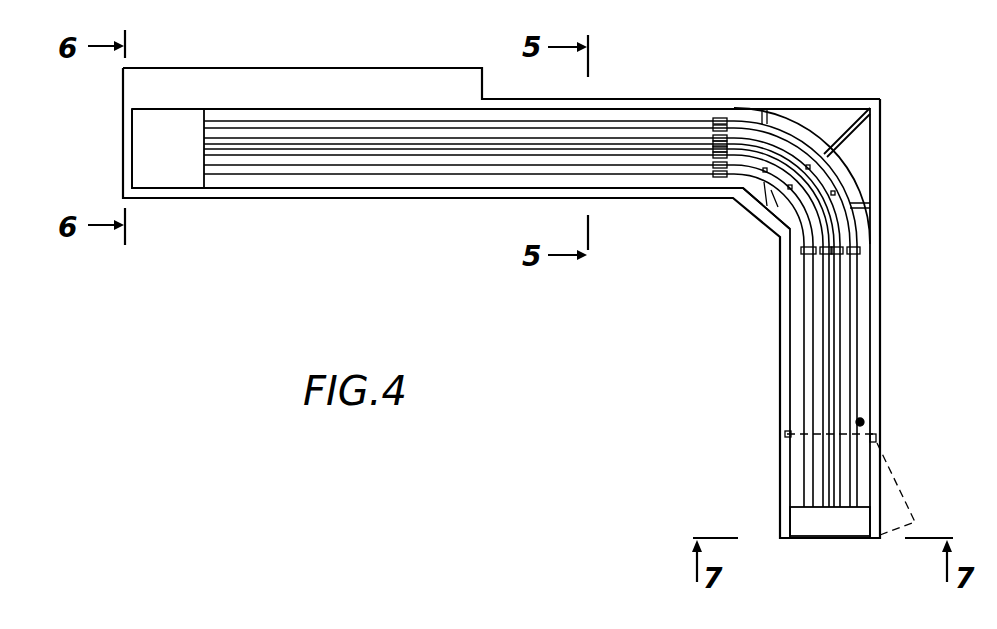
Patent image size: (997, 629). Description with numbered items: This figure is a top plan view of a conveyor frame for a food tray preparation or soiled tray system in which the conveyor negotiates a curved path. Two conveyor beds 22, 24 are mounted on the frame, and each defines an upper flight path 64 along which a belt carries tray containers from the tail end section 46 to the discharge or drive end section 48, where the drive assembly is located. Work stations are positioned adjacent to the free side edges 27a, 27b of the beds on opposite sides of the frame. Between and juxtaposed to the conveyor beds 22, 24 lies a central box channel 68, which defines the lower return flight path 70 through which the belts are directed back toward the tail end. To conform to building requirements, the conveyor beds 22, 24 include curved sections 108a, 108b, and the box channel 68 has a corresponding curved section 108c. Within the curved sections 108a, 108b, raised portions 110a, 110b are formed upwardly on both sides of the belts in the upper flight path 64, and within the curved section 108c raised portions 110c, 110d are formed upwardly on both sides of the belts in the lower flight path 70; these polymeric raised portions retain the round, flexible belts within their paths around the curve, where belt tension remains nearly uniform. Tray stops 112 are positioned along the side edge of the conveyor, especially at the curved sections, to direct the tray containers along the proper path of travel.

The conveyor bed 22 is at (428, 127).
The conveyor bed 24 is at (352, 186).
The free side edge 27a is at (357, 67).
The free side edge 27b is at (283, 199).
The tail end section 46 is at (123, 146).
The drive end section 48 is at (812, 538).
The upper flight path 64 is at (467, 120).
The central box channel 68 is at (455, 156).
The lower return flight path 70 is at (513, 142).
The curved section 108a is at (786, 135).
The curved section 108b is at (730, 192).
The curved section 108c is at (832, 188).
The raised portion 110a is at (728, 115).
The raised portion 110b is at (703, 130).
The raised portion 110c is at (840, 267).
The raised portion 110d is at (828, 268).
The tray stop 112 is at (824, 152).